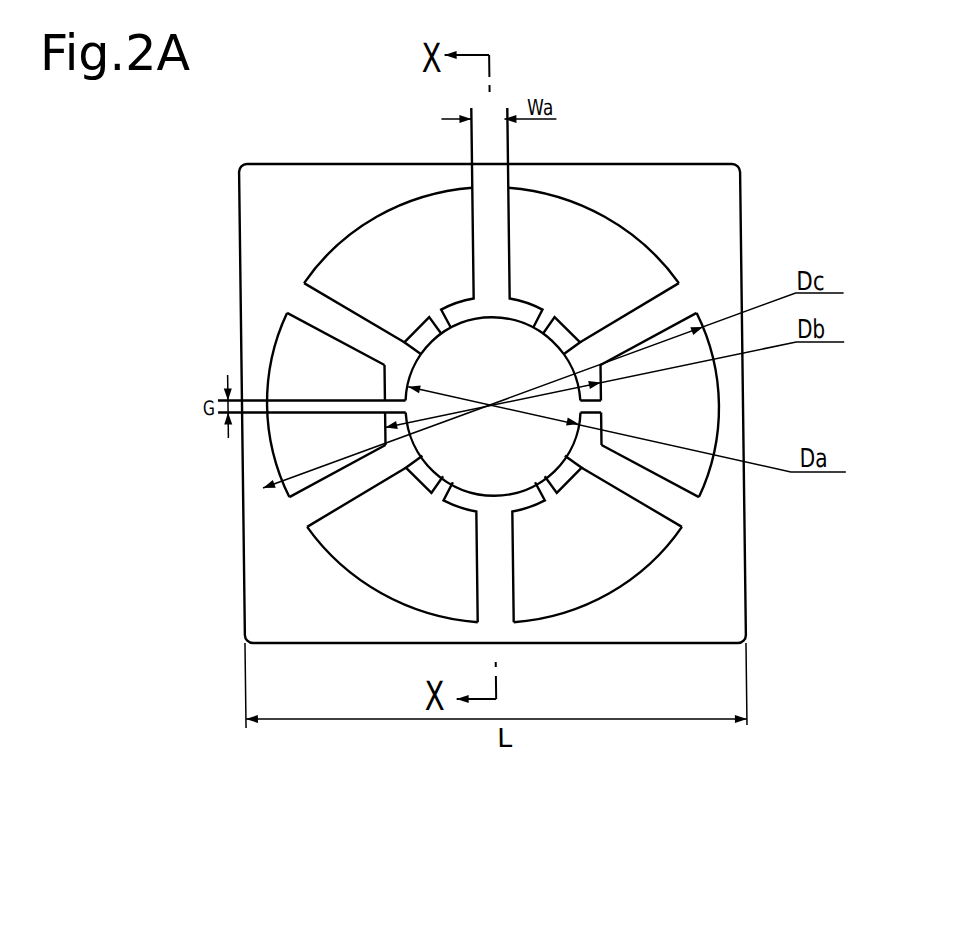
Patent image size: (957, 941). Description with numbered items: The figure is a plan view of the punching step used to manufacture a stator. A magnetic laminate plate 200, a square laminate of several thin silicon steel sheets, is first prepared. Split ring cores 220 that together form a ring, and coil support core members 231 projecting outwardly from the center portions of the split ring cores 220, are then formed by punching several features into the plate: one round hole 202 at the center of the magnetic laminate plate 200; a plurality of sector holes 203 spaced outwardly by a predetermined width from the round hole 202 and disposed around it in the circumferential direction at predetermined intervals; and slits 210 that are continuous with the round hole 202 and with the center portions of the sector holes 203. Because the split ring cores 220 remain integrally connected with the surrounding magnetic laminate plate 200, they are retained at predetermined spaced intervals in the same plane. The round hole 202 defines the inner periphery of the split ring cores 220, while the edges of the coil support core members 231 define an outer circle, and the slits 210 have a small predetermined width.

The magnetic laminate plate 200 is at (744, 624).
The round hole 202 is at (541, 357).
The sector holes 203 is at (603, 237).
The slits 210 is at (383, 404).
The split ring cores 220 is at (566, 472).
The coil support core members 231 is at (679, 506).